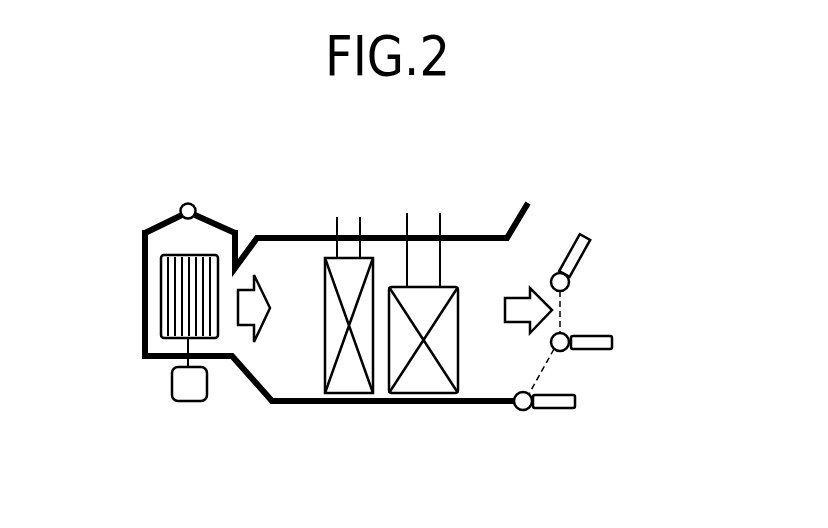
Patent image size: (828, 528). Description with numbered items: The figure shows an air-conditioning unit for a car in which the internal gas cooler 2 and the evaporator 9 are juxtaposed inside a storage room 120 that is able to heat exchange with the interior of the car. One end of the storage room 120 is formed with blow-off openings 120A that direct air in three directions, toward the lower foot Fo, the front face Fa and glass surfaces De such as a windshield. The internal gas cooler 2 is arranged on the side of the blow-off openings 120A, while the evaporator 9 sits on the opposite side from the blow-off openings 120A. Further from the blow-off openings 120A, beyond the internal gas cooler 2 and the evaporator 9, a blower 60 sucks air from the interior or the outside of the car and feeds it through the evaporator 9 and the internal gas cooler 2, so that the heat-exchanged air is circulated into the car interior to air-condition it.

The internal gas cooler 2 is at (443, 287).
The evaporator 9 is at (330, 260).
The blower 60 is at (161, 268).
The storage room 120 is at (297, 355).
The blow-off openings 120A is at (488, 353).
The glass surfaces De is at (551, 230).
The front face Fa is at (592, 307).
The lower foot Fo is at (591, 375).